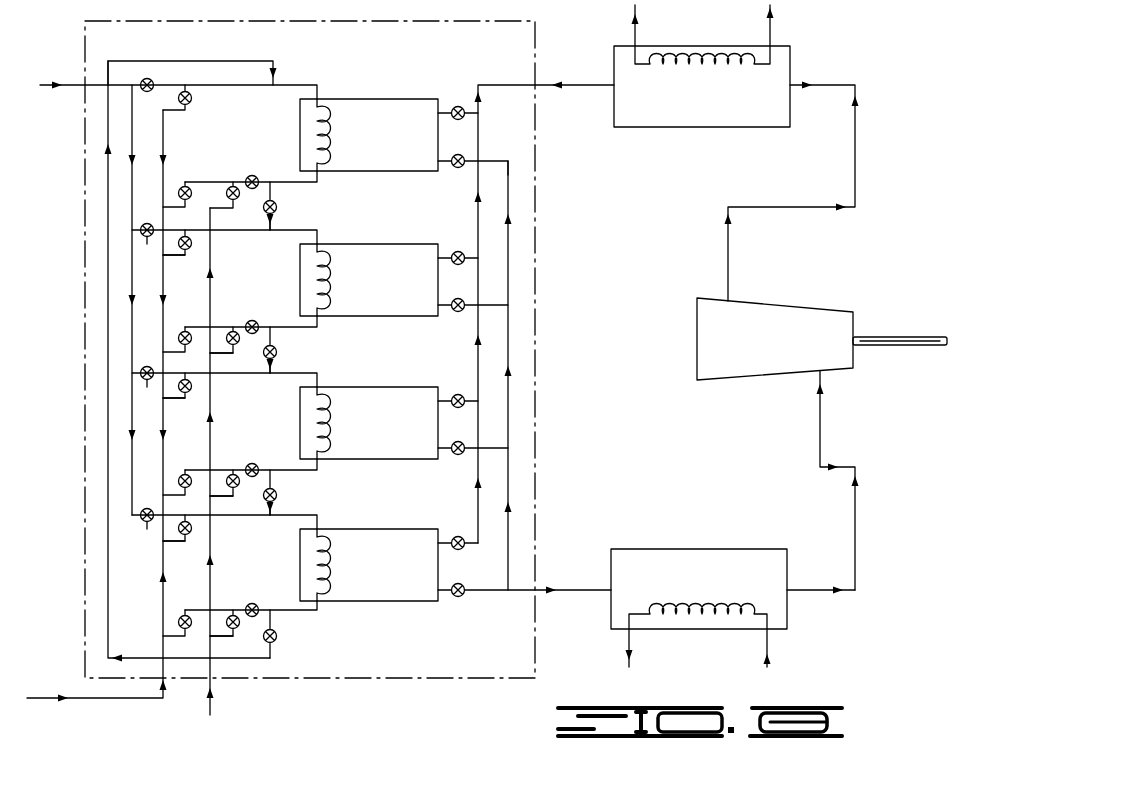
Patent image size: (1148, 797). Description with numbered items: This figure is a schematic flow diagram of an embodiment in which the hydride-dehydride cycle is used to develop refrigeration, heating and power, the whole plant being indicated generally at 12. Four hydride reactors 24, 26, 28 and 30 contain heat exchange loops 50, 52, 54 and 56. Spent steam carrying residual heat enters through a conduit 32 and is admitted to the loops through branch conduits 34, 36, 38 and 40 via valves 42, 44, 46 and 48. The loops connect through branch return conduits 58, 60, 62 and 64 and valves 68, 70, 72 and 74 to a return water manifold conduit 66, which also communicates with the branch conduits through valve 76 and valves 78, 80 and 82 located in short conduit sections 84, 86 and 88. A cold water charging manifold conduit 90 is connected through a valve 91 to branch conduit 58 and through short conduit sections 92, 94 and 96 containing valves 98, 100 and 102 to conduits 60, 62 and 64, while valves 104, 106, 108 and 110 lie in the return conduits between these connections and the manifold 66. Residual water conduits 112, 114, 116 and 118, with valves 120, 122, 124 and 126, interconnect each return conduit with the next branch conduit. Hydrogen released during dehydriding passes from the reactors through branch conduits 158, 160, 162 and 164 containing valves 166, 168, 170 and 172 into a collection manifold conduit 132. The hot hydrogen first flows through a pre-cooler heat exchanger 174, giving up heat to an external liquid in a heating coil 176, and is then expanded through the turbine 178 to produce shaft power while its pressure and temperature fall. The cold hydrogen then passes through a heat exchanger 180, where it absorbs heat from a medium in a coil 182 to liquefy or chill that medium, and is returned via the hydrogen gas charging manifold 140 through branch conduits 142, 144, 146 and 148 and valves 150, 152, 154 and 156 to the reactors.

The hydrogenation reactor system 12 is at (436, 680).
The hydride reactor 24 is at (388, 99).
The hydride reactor 26 is at (370, 243).
The hydride reactor 28 is at (370, 386).
The hydride reactor 30 is at (370, 529).
The conduit 32 is at (81, 84).
The branch conduit 34 is at (146, 78).
The branch conduit 36 is at (148, 222).
The branch conduit 38 is at (148, 365).
The branch conduit 40 is at (148, 507).
The valve 42 is at (154, 61).
The valve 44 is at (147, 244).
The valve 46 is at (147, 387).
The valve 48 is at (146, 526).
The heat exchange loop 50 is at (328, 166).
The heat exchange loop 52 is at (328, 311).
The heat exchange loop 54 is at (328, 454).
The heat exchange loop 56 is at (328, 596).
The branch return conduit 58 is at (288, 177).
The branch return conduit 60 is at (289, 320).
The branch return conduit 62 is at (289, 463).
The branch return conduit 64 is at (289, 604).
The return water manifold conduit 66 is at (160, 596).
The valve 68 is at (249, 177).
The valve 70 is at (249, 320).
The valve 72 is at (249, 463).
The valve 74 is at (249, 604).
The valve 76 is at (192, 98).
The valve 78 is at (192, 243).
The valve 80 is at (192, 386).
The valve 82 is at (192, 528).
The short conduit section 84 is at (170, 256).
The short conduit section 86 is at (170, 399).
The short conduit section 88 is at (168, 542).
The cold water charging manifold conduit 90 is at (214, 700).
The valve 91 is at (236, 203).
The short conduit section 92 is at (212, 353).
The short conduit section 94 is at (212, 496).
The short conduit section 96 is at (212, 636).
The valve 98 is at (236, 348).
The valve 100 is at (236, 491).
The valve 102 is at (236, 631).
The valve 104 is at (180, 186).
The valve 106 is at (180, 328).
The valve 108 is at (180, 471).
The valve 110 is at (180, 612).
The residual water conduit 112 is at (275, 220).
The residual water conduit 114 is at (275, 364).
The residual water conduit 116 is at (275, 507).
The residual water conduit 118 is at (107, 243).
The valve 120 is at (276, 204).
The valve 122 is at (276, 349).
The valve 124 is at (276, 492).
The valve 126 is at (276, 634).
The collection manifold conduit 132 is at (506, 330).
The hydrogen gas charging manifold 140 is at (474, 205).
The branch conduit 142 is at (452, 120).
The branch conduit 144 is at (452, 265).
The branch conduit 146 is at (452, 408).
The branch conduit 148 is at (453, 551).
The valve 150 is at (458, 106).
The valve 152 is at (458, 251).
The valve 154 is at (458, 394).
The valve 156 is at (458, 536).
The branch conduit 158 is at (492, 160).
The branch conduit 160 is at (492, 304).
The branch conduit 162 is at (492, 447).
The branch conduit 164 is at (492, 597).
The valve 166 is at (452, 168).
The valve 168 is at (452, 312).
The valve 170 is at (452, 455).
The valve 172 is at (451, 597).
The pre-cooler heat exchanger 174 is at (611, 616).
The heating coil 176 is at (686, 624).
The turbine 178 is at (792, 306).
The heat exchanger 180 is at (613, 48).
The heat exchange coil 182 is at (708, 48).